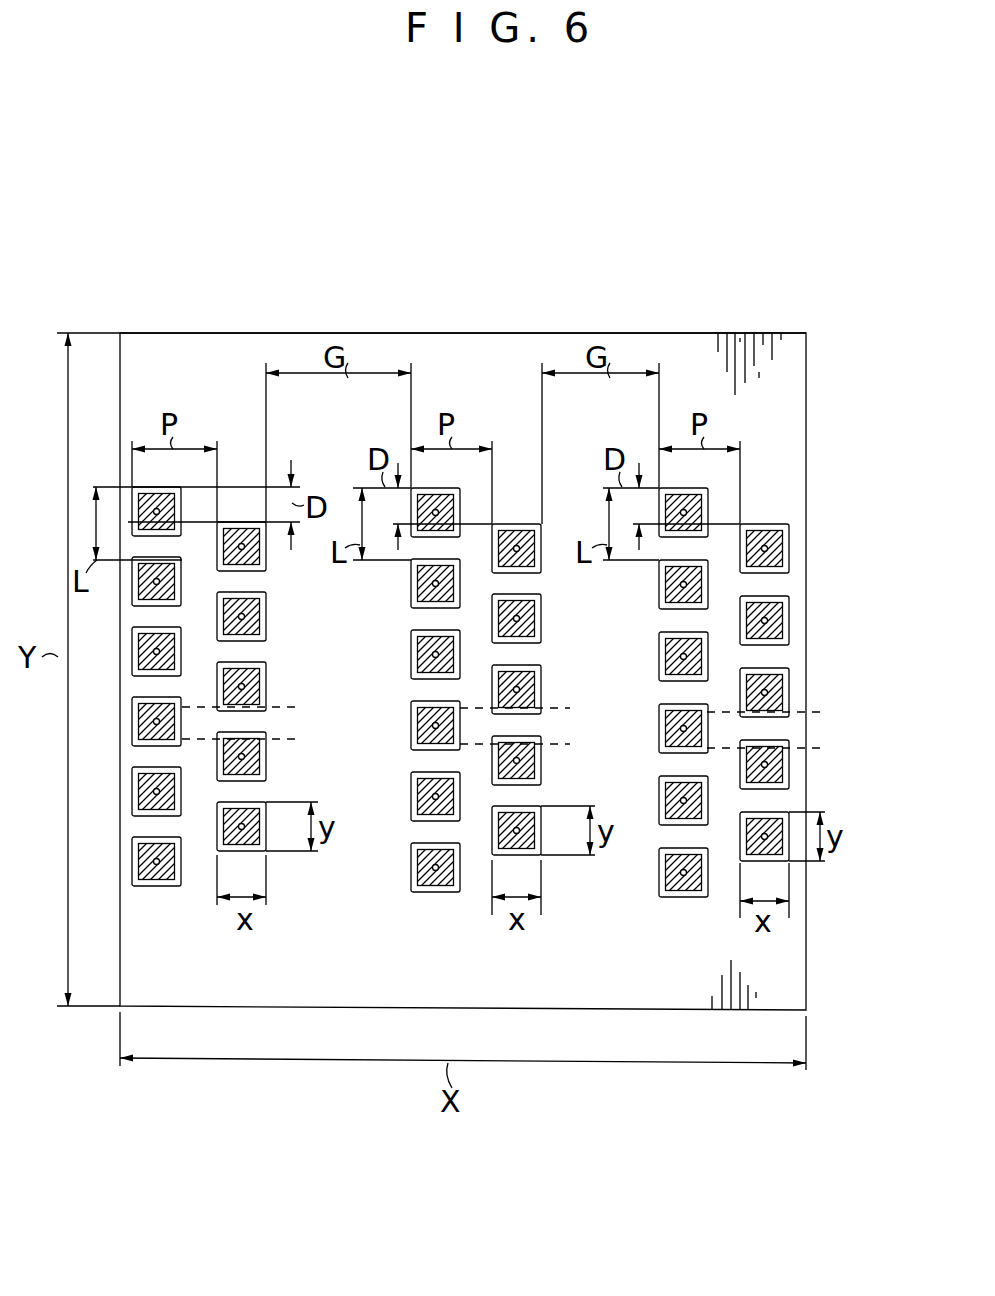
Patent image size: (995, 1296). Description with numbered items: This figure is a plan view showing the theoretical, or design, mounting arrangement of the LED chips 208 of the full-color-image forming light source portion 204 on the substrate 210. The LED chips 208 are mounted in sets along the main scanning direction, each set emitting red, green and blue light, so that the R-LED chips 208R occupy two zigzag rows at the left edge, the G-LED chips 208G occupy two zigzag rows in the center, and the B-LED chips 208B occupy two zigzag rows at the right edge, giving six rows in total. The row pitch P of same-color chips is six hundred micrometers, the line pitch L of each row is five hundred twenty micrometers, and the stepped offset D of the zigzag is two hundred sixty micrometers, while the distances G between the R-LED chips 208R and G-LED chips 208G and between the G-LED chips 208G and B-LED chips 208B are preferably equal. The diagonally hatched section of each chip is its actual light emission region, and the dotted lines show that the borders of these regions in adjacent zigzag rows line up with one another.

The full-color-image forming light source portion 204 is at (240, 312).
The substrate 210 is at (553, 345).
The LED chips 208 is at (460, 743).
The R-LED chip 208R is at (266, 640).
The G-LED chip 208G is at (411, 752).
The B-LED chip 208B is at (684, 720).